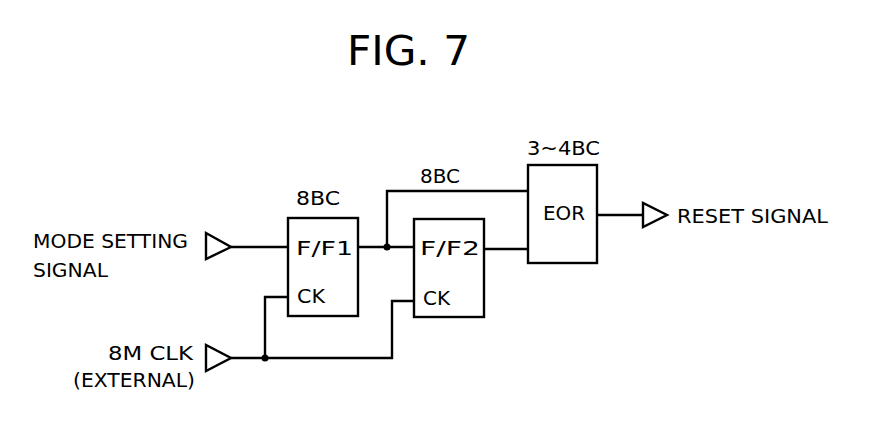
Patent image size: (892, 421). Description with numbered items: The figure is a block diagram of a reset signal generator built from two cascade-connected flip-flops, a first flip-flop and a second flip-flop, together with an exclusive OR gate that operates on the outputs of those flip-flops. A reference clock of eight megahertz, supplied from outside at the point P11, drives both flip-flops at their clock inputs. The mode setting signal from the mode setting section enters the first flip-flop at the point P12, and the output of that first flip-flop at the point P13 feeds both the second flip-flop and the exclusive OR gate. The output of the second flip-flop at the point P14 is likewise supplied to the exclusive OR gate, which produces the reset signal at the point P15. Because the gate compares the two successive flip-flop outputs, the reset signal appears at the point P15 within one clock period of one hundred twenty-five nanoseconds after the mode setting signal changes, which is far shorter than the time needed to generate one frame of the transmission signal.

The point P11 is at (239, 357).
The point P12 is at (246, 246).
The point P13 is at (493, 190).
The point P14 is at (508, 251).
The point P15 is at (621, 218).